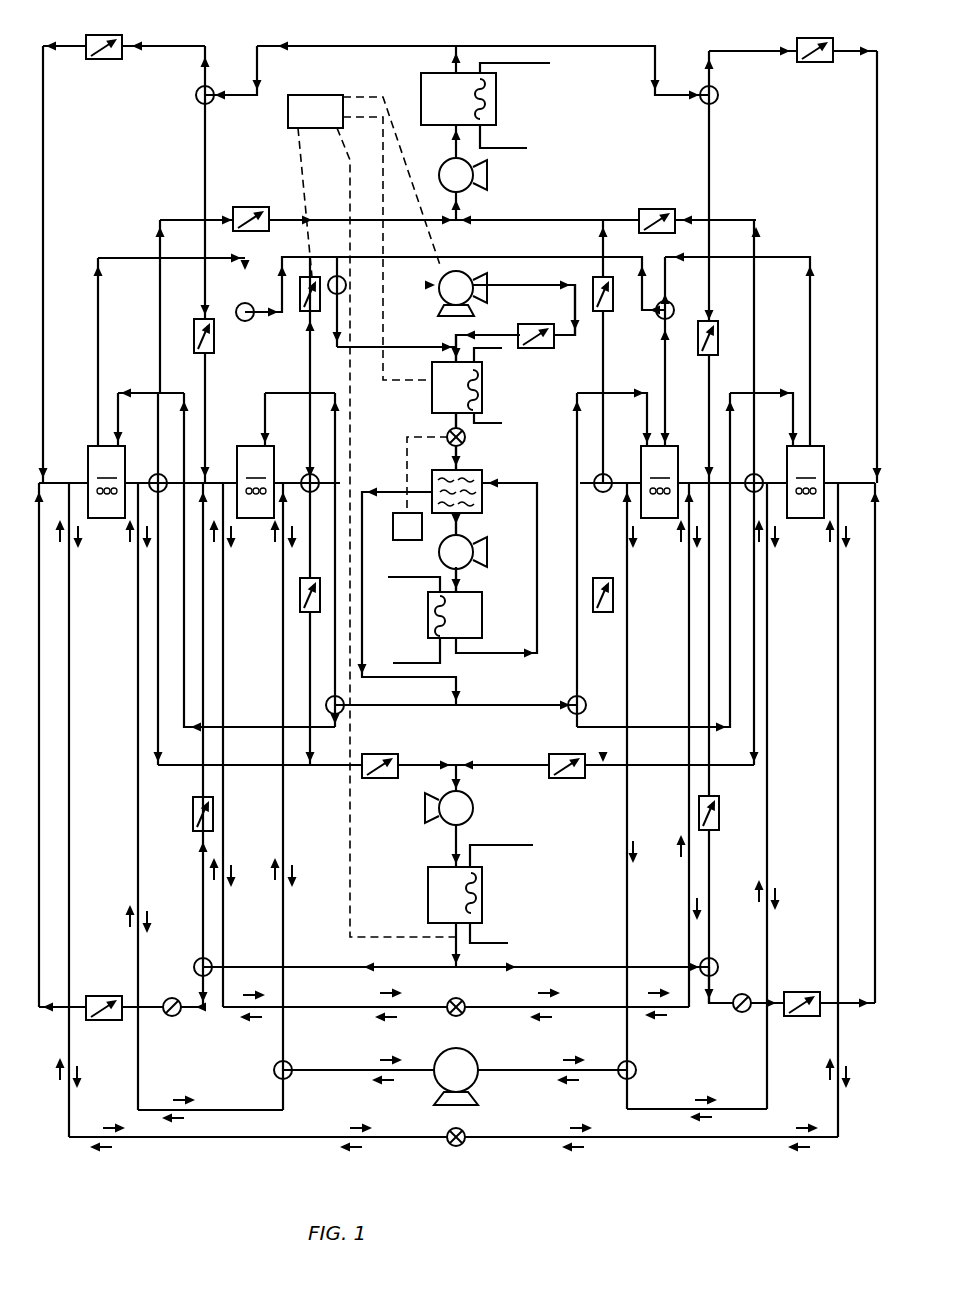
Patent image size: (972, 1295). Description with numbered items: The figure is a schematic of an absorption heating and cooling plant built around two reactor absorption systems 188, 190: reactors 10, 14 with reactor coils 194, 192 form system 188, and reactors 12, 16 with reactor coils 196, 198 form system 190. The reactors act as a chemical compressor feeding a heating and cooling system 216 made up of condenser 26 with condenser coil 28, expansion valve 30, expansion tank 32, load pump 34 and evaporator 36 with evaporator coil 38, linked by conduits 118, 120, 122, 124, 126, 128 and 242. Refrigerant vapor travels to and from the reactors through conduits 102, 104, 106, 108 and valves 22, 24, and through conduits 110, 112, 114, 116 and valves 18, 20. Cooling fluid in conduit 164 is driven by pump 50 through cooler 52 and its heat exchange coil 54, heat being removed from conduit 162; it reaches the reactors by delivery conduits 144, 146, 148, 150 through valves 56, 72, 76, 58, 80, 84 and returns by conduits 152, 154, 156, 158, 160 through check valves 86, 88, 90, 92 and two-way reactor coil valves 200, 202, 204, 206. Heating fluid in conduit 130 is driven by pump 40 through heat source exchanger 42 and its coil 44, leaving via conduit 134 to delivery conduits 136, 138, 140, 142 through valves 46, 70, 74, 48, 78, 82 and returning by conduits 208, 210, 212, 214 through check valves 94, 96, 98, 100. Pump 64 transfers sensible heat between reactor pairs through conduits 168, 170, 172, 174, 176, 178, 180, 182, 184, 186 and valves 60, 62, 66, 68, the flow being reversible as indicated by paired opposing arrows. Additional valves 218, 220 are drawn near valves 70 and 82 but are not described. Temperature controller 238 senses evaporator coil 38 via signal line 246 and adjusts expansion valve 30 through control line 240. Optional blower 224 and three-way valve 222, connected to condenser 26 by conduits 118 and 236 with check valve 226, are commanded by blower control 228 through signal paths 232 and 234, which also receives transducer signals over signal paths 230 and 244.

The reactor 10 is at (257, 482).
The reactor 12 is at (661, 482).
The reactor 14 is at (108, 482).
The reactor 16 is at (807, 482).
The valve 18 is at (238, 307).
The valve 20 is at (652, 318).
The valve 22 is at (340, 713).
The valve 24 is at (572, 713).
The condenser 26 is at (432, 399).
The condenser coil 28 is at (497, 394).
The expansion valve 30 is at (465, 437).
The expansion tank 32 is at (482, 500).
The load pump 34 is at (487, 550).
The evaporator 36 is at (482, 610).
The evaporator coil 38 is at (415, 660).
The heat source pump 40 is at (473, 808).
The heat source exchanger 42 is at (428, 885).
The heat exchanger coil 44 is at (516, 850).
The two-way valve 46 is at (194, 965).
The two-way valve 48 is at (716, 962).
The cooler pump 50 is at (488, 175).
The cooler 52 is at (421, 99).
The heat exchange coil 54 is at (528, 101).
The two-way cooler valve 56 is at (196, 100).
The two-way cooler valve 58 is at (718, 95).
The valve 60 is at (269, 1071).
The valve 62 is at (636, 1076).
The pump 64 is at (477, 1080).
The valve 66 is at (463, 1000).
The valve 68 is at (463, 1130).
The check valve 70 is at (110, 1020).
The check valve 72 is at (107, 59).
The check valve 74 is at (192, 812).
The check valve 76 is at (196, 320).
The check valve 78 is at (717, 812).
The check valve 80 is at (718, 344).
The valve 82 is at (808, 1016).
The valve 84 is at (815, 62).
The check valve 86 is at (246, 207).
The check valve 88 is at (300, 315).
The check valve 90 is at (609, 313).
The check valve 92 is at (657, 209).
The check valve 94 is at (384, 778).
The check valve 96 is at (300, 614).
The check valve 98 is at (565, 778).
The check valve 100 is at (613, 614).
The conduit 102 is at (272, 727).
The conduit 104 is at (272, 381).
The conduit 106 is at (655, 720).
The conduit 108 is at (630, 393).
The conduit 110 is at (98, 326).
The conduit 112 is at (217, 418).
The conduit 114 is at (810, 340).
The conduit 116 is at (665, 350).
The conduit 118 is at (455, 355).
The conduit 120 is at (455, 421).
The line 122 is at (440, 458).
The conduit 124 is at (462, 520).
The conduit 126 is at (462, 577).
The conduit 128 is at (364, 622).
The conduit 130 is at (461, 786).
The conduit 134 is at (465, 947).
The delivery conduit 136 is at (39, 729).
The delivery conduit 138 is at (203, 881).
The delivery conduit 140 is at (875, 765).
The delivery conduit 142 is at (709, 870).
The delivery conduit 144 is at (43, 148).
The delivery conduit 146 is at (205, 157).
The delivery conduit 148 is at (877, 158).
The delivery conduit 150 is at (709, 165).
The return conduit 152 is at (160, 295).
The return conduit 154 is at (310, 352).
The return conduit 156 is at (754, 345).
The return conduit 158 is at (603, 370).
The conduit 160 is at (461, 208).
The conduit 162 is at (456, 142).
The conduit 164 is at (456, 65).
The conduit 168 is at (138, 648).
The conduit 170 is at (283, 913).
The conduit 172 is at (767, 777).
The conduit 174 is at (627, 901).
The conduit 176 is at (70, 602).
The conduit 178 is at (225, 597).
The conduit 180 is at (838, 636).
The conduit 182 is at (689, 579).
The conduit 184 is at (328, 1068).
The conduit 186 is at (532, 1068).
The reactor absorption system 188 is at (382, 716).
The reactor absorption system 190 is at (530, 718).
The reactor coil 192 is at (109, 503).
The reactor coil 194 is at (258, 503).
The reactor coil 196 is at (662, 503).
The reactor coil 198 is at (808, 503).
The two-way reactor coil valve 200 is at (157, 474).
The two-way reactor coil valve 202 is at (307, 474).
The two-way reactor coil valve 204 is at (604, 474).
The two-way reactor coil valve 206 is at (760, 492).
The return conduit 208 is at (278, 766).
The return conduit 210 is at (310, 548).
The return conduit 212 is at (577, 546).
The return conduit 214 is at (661, 766).
The heating and cooling system 216 is at (512, 437).
The check valve 218 is at (176, 1016).
The check valve 220 is at (738, 1012).
The three-way valve 222 is at (330, 277).
The blower 224 is at (474, 280).
The check valve 226 is at (536, 348).
The blower control 228 is at (328, 95).
The signal path 230 is at (350, 840).
The signal path 232 is at (302, 160).
The signal path 234 is at (447, 238).
The conduit 236 is at (500, 333).
The temperature controller 238 is at (398, 540).
The control line 240 is at (405, 460).
The conduit 242 is at (504, 480).
The signal path 244 is at (380, 322).
The signal line 246 is at (410, 578).